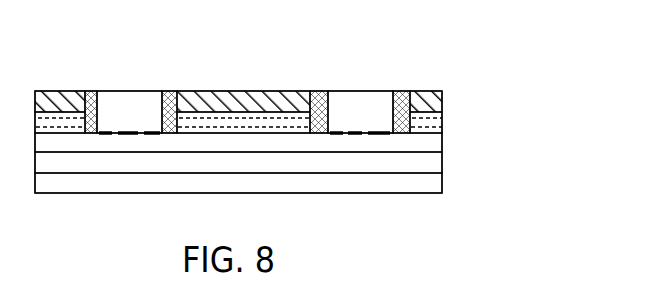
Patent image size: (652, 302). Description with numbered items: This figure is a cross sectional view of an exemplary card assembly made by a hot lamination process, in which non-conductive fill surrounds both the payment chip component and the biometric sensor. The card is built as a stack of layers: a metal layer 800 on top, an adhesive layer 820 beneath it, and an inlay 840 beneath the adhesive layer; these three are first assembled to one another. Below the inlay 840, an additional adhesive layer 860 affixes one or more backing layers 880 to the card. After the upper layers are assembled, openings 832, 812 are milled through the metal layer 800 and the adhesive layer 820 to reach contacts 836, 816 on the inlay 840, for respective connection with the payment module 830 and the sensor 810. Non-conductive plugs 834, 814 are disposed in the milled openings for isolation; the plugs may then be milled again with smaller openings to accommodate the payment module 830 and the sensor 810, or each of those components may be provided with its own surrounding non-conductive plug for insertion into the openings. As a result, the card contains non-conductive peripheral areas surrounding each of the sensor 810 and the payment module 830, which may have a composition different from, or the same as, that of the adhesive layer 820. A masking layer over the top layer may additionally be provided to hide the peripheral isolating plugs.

The metal layer 800 is at (442, 100).
The adhesive layer 820 is at (442, 128).
The inlay 840 is at (433, 145).
The additional adhesive layer 860 is at (430, 168).
The backing layer 880 is at (442, 193).
The payment module 830 is at (137, 98).
The opening 832 is at (185, 95).
The non-conductive plug 834 is at (93, 91).
The contact 836 is at (125, 134).
The sensor 810 is at (368, 97).
The opening 812 is at (418, 93).
The non-conductive plug 814 is at (322, 91).
The contact 816 is at (355, 135).